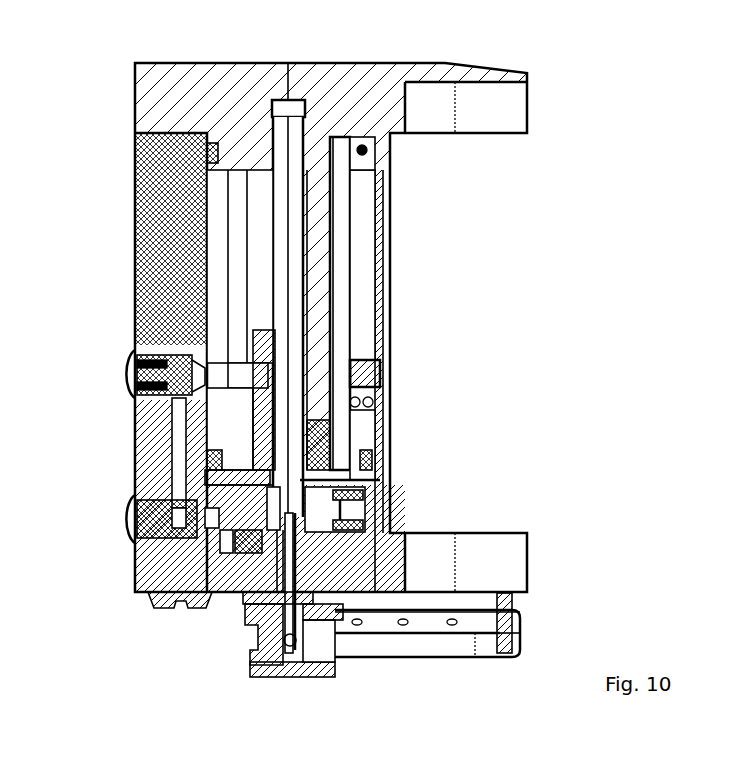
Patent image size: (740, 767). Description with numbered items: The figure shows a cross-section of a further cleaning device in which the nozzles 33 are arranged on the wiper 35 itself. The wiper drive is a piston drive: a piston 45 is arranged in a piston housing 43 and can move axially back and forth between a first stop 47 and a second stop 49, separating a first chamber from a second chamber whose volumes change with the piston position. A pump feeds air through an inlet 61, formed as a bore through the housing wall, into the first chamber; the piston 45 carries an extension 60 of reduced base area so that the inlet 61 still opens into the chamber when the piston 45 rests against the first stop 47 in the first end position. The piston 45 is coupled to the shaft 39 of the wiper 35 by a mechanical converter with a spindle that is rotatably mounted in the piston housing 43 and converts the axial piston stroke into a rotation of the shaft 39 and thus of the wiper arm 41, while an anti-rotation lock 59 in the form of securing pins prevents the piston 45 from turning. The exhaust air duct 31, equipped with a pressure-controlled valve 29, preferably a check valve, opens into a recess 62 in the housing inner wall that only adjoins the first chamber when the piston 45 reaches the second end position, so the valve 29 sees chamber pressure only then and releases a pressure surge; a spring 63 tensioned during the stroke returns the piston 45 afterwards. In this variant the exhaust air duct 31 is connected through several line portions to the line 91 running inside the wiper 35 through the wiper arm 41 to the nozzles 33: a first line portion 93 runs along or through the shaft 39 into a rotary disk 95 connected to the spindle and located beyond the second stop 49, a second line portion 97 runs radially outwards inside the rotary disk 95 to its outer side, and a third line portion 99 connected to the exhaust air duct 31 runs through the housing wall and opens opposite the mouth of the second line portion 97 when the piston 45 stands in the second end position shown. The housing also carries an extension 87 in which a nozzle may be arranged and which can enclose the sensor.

The first stop 47 is at (332, 137).
The inlet 61 is at (210, 190).
The piston housing 43 is at (170, 230).
The anti-rotation lock 59 is at (340, 297).
The extension 60 is at (337, 342).
The recess 62 is at (390, 368).
The piston 45 is at (390, 417).
The second stop 49 is at (388, 470).
The rotary disk 95 is at (320, 518).
The pressure-controlled valve 29 is at (163, 382).
The exhaust air duct 31 is at (178, 440).
The spring 63 is at (190, 470).
The third line portion 99 is at (168, 542).
The second line portion 97 is at (250, 553).
The shaft 39 is at (272, 577).
The first line portion 93 is at (262, 618).
The wiper 35 is at (270, 677).
The line 91 is at (310, 672).
The nozzle 33 is at (452, 626).
The wiper arm 41 is at (452, 643).
The extension 87 is at (518, 578).